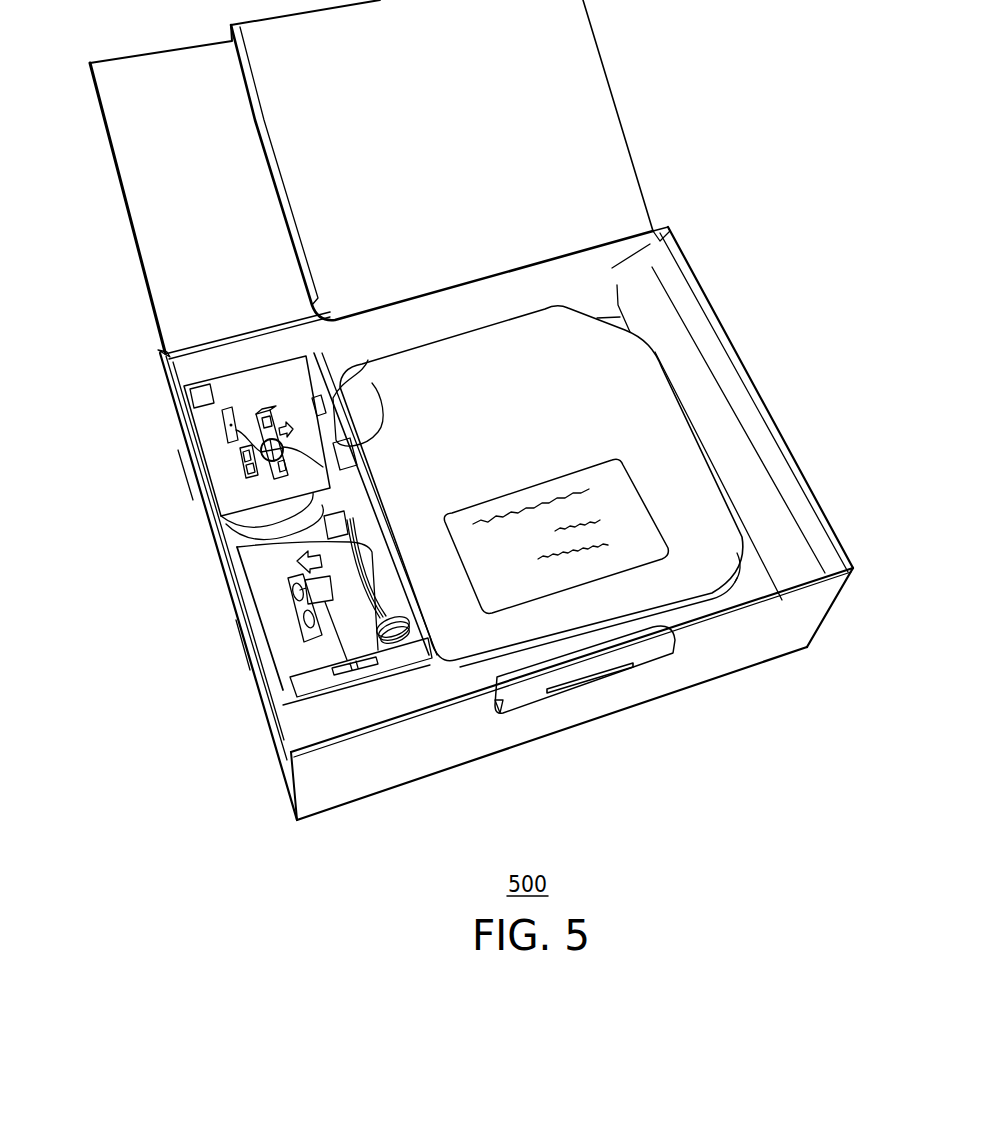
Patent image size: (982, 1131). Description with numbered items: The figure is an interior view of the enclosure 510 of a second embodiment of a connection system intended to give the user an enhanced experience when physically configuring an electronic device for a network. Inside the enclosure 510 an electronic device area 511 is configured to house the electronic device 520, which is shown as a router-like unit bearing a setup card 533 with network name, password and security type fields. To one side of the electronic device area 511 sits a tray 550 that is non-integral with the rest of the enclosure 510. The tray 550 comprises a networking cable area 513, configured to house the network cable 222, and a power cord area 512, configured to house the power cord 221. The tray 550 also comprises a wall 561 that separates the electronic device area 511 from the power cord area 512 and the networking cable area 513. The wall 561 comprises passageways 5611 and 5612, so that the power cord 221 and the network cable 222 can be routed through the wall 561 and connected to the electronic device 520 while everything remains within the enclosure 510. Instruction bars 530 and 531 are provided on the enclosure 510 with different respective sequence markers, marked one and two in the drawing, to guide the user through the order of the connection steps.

The enclosure 510 is at (200, 312).
The electronic device area 511 is at (583, 298).
The power cord area 512 is at (317, 717).
The networking cable area 513 is at (218, 532).
The electronic device 520 is at (610, 415).
The instruction bar 530 is at (262, 572).
The instruction bar 531 is at (210, 428).
The setup card 533 is at (650, 517).
The tray 550 is at (263, 720).
The wall 561 is at (232, 556).
The passageway 5611 is at (448, 628).
The passageway 5612 is at (368, 360).
The power cord 221 is at (231, 646).
The network cable 222 is at (186, 475).